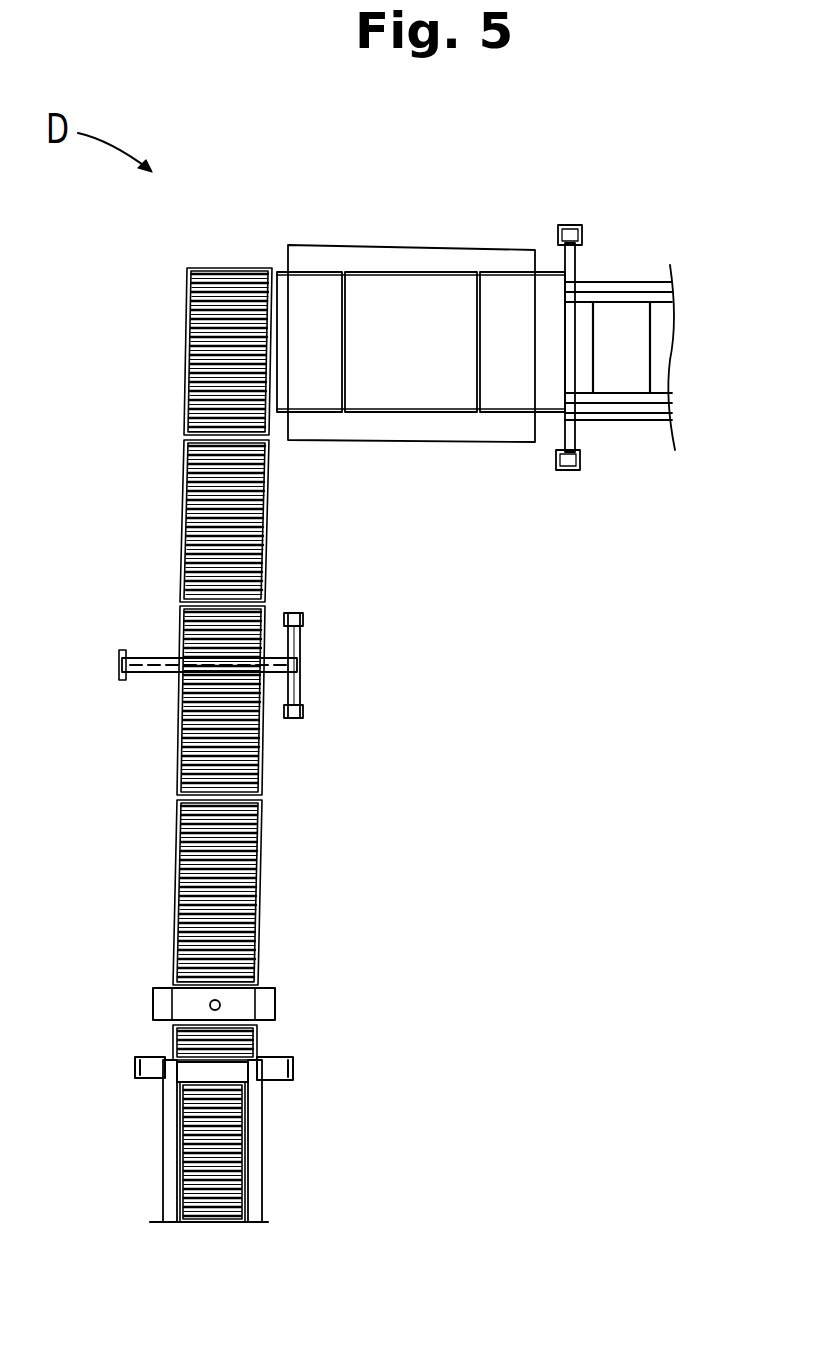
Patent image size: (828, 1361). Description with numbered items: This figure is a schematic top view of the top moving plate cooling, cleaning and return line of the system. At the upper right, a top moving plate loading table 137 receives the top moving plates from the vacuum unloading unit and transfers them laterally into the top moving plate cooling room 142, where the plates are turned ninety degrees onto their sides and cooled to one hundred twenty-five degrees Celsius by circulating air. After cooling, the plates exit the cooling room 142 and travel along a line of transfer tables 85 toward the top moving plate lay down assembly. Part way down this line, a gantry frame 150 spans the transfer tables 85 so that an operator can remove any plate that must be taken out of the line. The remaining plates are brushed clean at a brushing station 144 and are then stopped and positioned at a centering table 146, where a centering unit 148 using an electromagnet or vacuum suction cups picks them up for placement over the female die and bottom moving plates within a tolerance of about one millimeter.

The transfer tables 85 is at (197, 378).
The top moving plate cooling room 142 is at (415, 302).
The top moving plate loading table 137 is at (627, 320).
The gantry frame 150 is at (303, 642).
The brushing station 144 is at (263, 1010).
The centering unit 148 is at (268, 1070).
The centering table 146 is at (213, 1225).